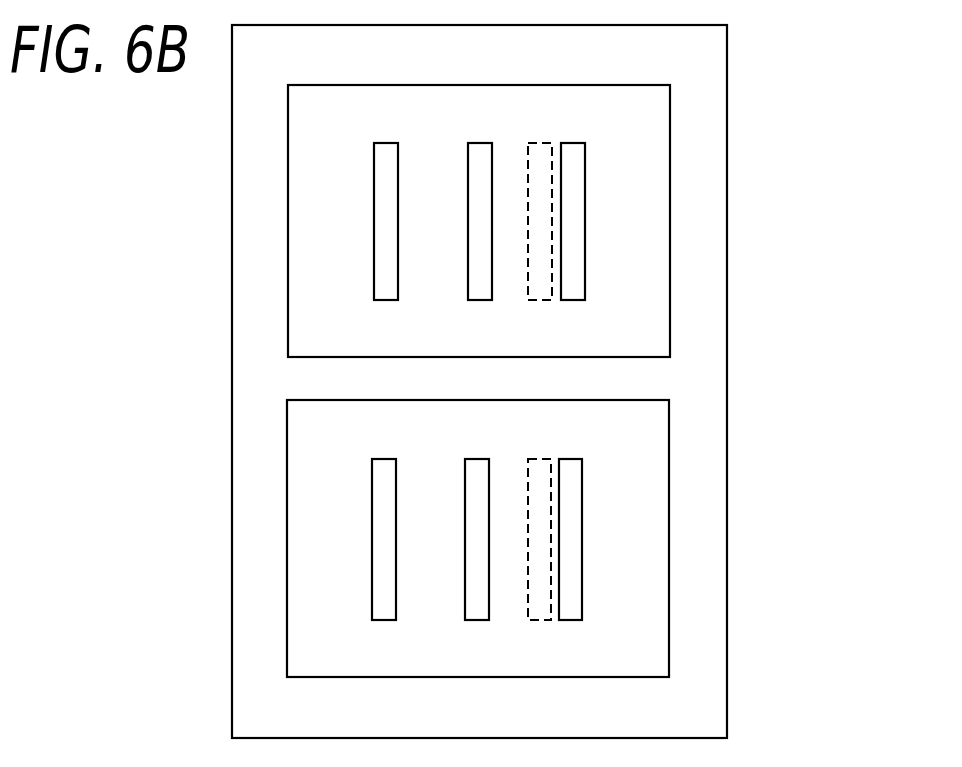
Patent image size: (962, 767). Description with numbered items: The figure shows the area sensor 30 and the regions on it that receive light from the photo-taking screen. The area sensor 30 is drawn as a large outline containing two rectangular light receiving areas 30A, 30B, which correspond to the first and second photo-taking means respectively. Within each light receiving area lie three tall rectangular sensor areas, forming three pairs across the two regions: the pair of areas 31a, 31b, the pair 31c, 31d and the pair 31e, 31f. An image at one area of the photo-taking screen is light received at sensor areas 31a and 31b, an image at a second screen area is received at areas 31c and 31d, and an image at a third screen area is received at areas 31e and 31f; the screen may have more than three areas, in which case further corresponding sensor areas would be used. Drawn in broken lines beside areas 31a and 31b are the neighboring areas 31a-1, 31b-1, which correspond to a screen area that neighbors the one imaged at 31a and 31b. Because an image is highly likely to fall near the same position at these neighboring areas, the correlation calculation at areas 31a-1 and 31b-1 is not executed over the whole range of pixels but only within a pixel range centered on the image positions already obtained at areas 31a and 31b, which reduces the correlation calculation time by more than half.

The area sensor 30 is at (727, 215).
The light receiving area 30A is at (670, 140).
The light receiving area 30B is at (669, 450).
The sensor area 31a is at (586, 150).
The neighboring sensor area 31a-1 is at (538, 300).
The sensor area 31b is at (576, 459).
The neighboring sensor area 31b-1 is at (537, 620).
The sensor area 31c is at (468, 165).
The sensor area 31d is at (465, 475).
The sensor area 31e is at (374, 165).
The sensor area 31f is at (377, 475).